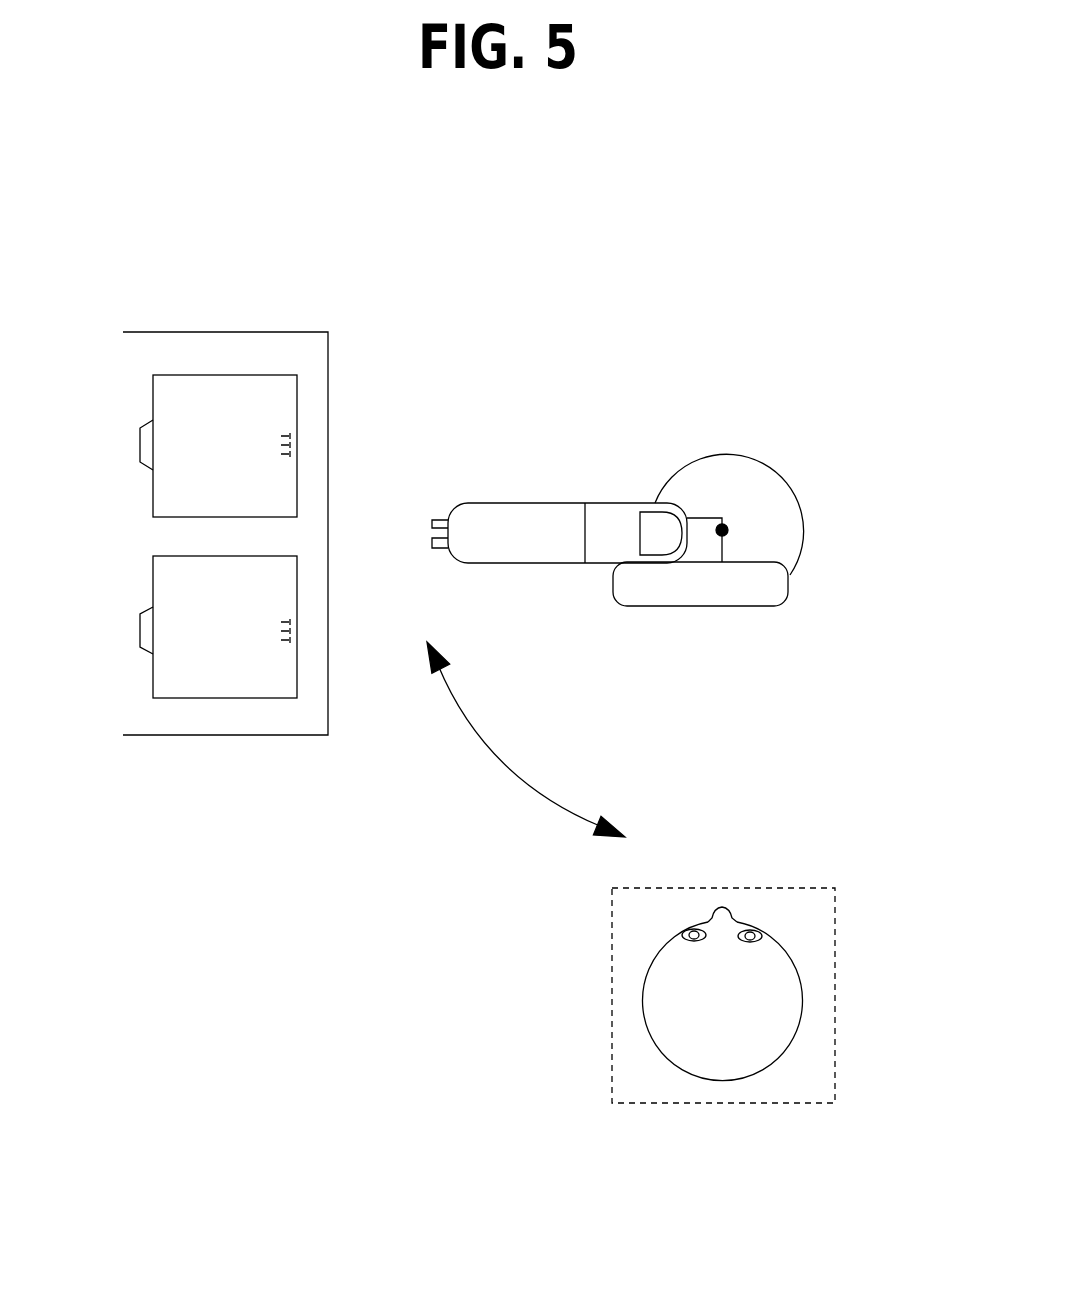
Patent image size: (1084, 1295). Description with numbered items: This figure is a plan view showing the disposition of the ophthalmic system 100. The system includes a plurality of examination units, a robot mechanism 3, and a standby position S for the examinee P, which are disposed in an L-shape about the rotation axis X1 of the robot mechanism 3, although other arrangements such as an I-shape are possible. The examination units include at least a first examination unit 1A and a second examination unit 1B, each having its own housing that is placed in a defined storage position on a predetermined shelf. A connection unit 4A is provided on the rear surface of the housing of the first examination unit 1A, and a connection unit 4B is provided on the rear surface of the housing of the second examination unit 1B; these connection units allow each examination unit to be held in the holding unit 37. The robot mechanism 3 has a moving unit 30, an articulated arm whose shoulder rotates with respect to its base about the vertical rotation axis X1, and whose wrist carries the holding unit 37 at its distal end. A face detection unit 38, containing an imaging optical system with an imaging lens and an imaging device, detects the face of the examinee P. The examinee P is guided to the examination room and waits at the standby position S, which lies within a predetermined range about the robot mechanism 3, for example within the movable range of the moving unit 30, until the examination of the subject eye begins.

The ophthalmic system 100 is at (265, 441).
The first examination unit 1A is at (160, 572).
The second examination unit 1B is at (160, 390).
The connection unit 4A is at (295, 640).
The connection unit 4B is at (295, 435).
The robot mechanism 3 is at (762, 385).
The moving unit 30 is at (708, 597).
The holding unit 37 is at (432, 541).
The face detection unit 38 is at (633, 520).
The rotation axis X1 is at (724, 528).
The standby position S is at (822, 917).
The examinee P is at (782, 1038).